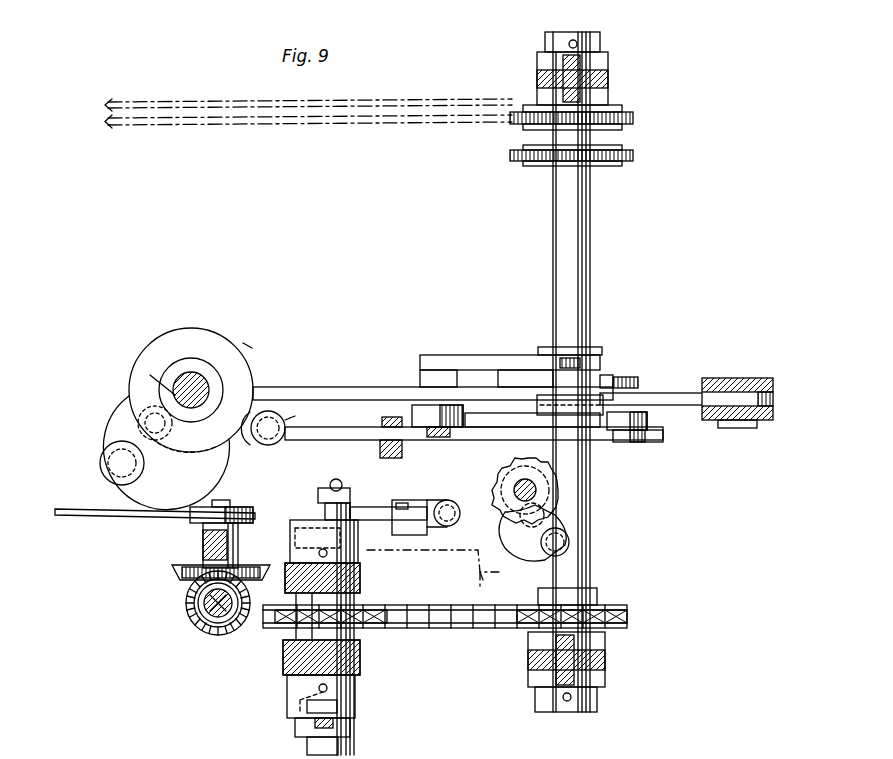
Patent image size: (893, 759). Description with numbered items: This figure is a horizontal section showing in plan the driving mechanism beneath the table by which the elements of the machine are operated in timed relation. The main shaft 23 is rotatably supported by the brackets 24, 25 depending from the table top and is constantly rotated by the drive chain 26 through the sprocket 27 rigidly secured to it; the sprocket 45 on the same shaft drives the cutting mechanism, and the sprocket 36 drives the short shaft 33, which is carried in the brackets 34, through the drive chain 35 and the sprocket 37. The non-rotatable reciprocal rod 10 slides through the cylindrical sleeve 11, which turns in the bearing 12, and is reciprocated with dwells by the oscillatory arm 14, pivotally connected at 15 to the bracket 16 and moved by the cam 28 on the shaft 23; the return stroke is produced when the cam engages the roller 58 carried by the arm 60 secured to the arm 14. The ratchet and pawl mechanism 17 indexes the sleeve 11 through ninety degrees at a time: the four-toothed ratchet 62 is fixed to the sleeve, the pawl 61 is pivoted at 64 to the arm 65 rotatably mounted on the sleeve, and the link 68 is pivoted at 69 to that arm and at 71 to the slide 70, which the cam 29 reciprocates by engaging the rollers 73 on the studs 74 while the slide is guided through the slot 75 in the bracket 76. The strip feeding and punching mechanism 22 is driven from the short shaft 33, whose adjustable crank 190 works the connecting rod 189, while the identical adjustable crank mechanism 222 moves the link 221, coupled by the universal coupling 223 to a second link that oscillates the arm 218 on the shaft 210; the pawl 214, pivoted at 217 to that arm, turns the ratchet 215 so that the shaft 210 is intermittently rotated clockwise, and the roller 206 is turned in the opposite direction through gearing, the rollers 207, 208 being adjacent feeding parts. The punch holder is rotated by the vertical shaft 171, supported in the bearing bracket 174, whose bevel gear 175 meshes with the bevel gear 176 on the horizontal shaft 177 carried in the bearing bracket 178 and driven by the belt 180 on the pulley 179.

The non-rotatable reciprocal rod 10 is at (191, 378).
The cylindrical sleeve 11 is at (199, 385).
The bearing 12 is at (300, 549).
The oscillatory arm 14 is at (330, 385).
The pivot connection 15 is at (745, 430).
The bracket 16 is at (755, 378).
The ratchet and pawl mechanism 17 is at (247, 380).
The strip feeding and punching mechanism 22 is at (373, 554).
The shaft 23 is at (590, 272).
The bracket 24 is at (605, 676).
The bracket 25 is at (608, 84).
The drive chain 26 is at (445, 127).
The sprocket 27 is at (633, 120).
The cam 28 is at (625, 380).
The cam 29 is at (478, 412).
The short shaft 33 is at (287, 703).
The brackets 34 is at (360, 575).
The drive chain 35 is at (466, 632).
The sprocket 36 is at (597, 605).
The sprocket 37 is at (296, 632).
The sprocket 45 is at (535, 166).
The roller 58 is at (600, 380).
The arm 60 is at (520, 355).
The pawl 61 is at (166, 453).
The four-toothed ratchet 62 is at (165, 350).
The pivot 64 is at (112, 478).
The arm 65 is at (125, 425).
The link 68 is at (268, 452).
The pivot connection 69 is at (155, 378).
The slide 70 is at (322, 442).
The pivot connection 71 is at (302, 412).
The rollers 73 is at (440, 442).
The studs 74 is at (442, 405).
The slot 75 is at (382, 422).
The bracket 76 is at (398, 412).
The vertical shaft 171 is at (215, 618).
The bearing bracket 174 is at (220, 615).
The bevel gear 175 is at (192, 612).
The bevel gear 176 is at (178, 578).
The horizontal shaft 177 is at (228, 502).
The bearing bracket 178 is at (203, 548).
The pulley 179 is at (248, 512).
The belt 180 is at (122, 520).
The connecting rod 189 is at (333, 723).
The adjustable crank 190 is at (337, 707).
The roller 206 is at (559, 755).
The element 207 is at (439, 755).
The element 208 is at (679, 755).
The shaft 210 is at (536, 492).
The pawl 214 is at (482, 578).
The ratchet 215 is at (492, 498).
The pivot 217 is at (570, 543).
The arm 218 is at (560, 521).
The link 221 is at (380, 507).
The adjustable crank mechanism 222 is at (360, 535).
The universal coupling 223 is at (419, 504).